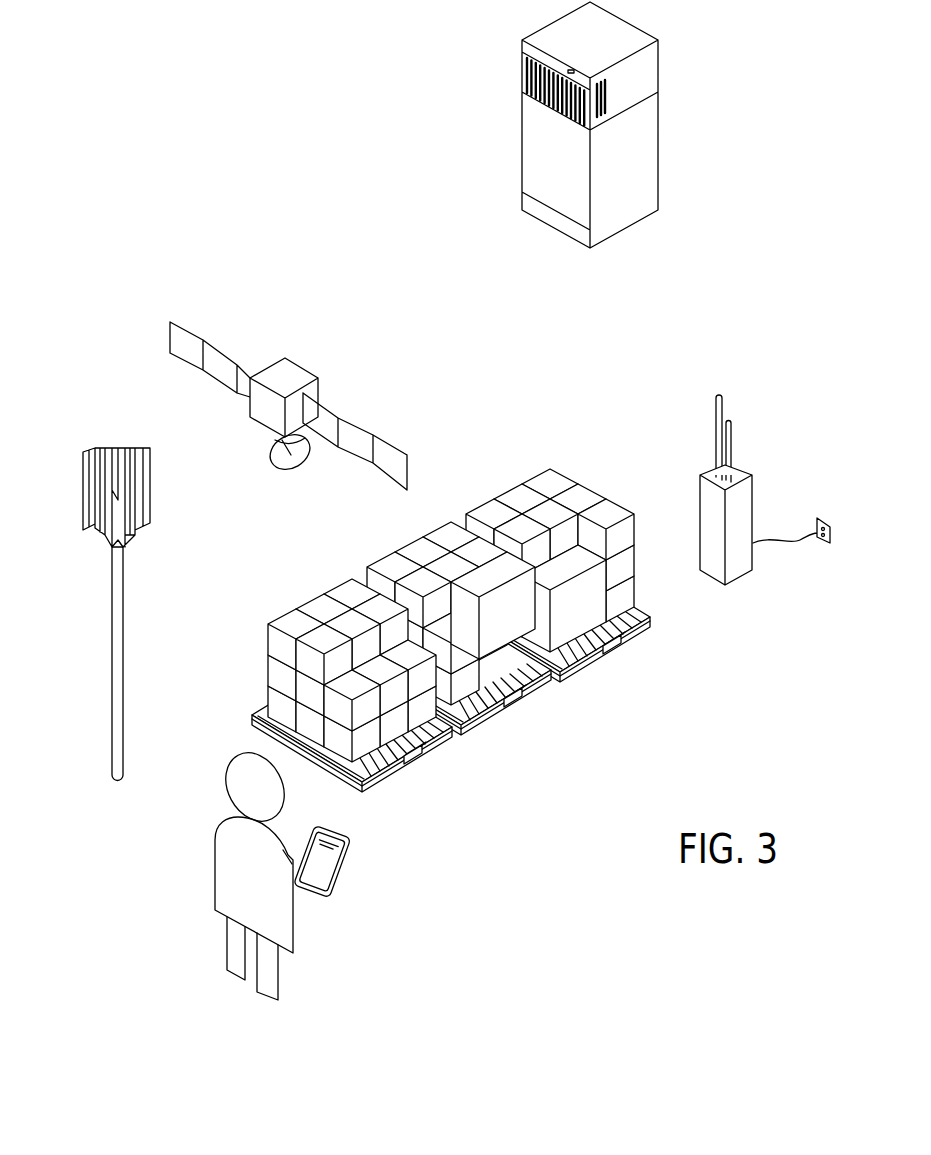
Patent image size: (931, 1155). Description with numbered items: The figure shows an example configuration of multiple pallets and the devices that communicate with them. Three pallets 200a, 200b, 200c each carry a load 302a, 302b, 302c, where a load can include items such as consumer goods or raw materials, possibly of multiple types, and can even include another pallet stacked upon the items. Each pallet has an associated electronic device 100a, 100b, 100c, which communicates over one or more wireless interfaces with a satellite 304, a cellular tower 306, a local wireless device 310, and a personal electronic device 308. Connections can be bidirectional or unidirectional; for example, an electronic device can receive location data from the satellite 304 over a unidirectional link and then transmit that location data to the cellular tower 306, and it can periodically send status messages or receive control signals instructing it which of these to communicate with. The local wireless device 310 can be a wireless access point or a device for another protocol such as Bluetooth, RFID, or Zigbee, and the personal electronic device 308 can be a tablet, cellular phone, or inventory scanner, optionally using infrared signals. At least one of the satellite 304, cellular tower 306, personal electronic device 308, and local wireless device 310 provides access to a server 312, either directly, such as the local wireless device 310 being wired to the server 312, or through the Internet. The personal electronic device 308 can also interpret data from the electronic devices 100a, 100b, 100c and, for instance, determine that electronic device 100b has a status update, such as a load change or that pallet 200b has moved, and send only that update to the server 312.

The electronic device 100a is at (422, 756).
The electronic device 100b is at (523, 705).
The electronic device 100c is at (621, 650).
The pallet 200a is at (448, 735).
The pallet 200b is at (549, 682).
The pallet 200c is at (647, 622).
The load 302a is at (293, 596).
The load 302b is at (393, 540).
The load 302c is at (498, 515).
The satellite 304 is at (170, 342).
The cellular tower 306 is at (112, 630).
The personal electronic device 308 is at (350, 847).
The local wireless device 310 is at (700, 497).
The server 312 is at (521, 157).